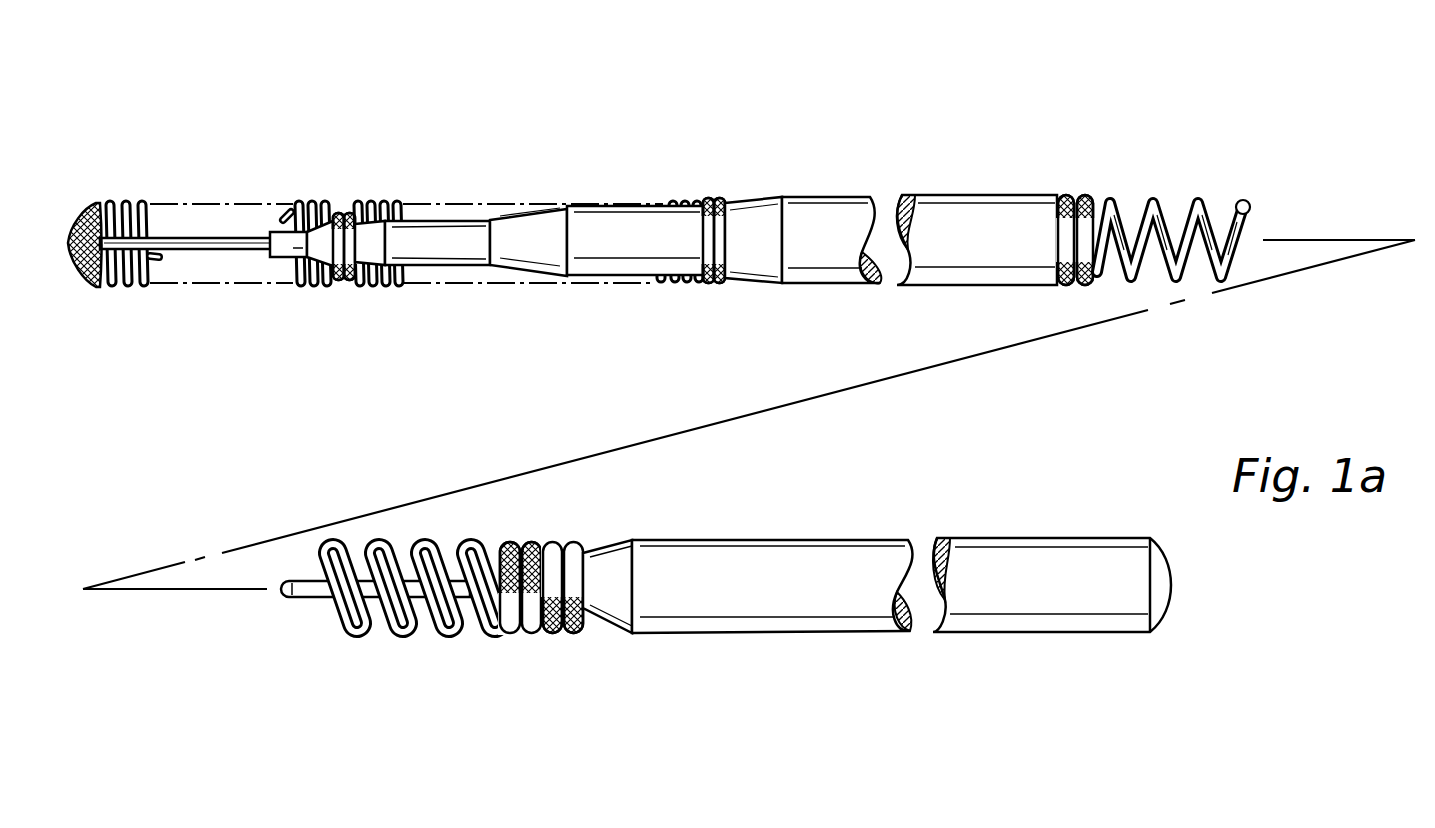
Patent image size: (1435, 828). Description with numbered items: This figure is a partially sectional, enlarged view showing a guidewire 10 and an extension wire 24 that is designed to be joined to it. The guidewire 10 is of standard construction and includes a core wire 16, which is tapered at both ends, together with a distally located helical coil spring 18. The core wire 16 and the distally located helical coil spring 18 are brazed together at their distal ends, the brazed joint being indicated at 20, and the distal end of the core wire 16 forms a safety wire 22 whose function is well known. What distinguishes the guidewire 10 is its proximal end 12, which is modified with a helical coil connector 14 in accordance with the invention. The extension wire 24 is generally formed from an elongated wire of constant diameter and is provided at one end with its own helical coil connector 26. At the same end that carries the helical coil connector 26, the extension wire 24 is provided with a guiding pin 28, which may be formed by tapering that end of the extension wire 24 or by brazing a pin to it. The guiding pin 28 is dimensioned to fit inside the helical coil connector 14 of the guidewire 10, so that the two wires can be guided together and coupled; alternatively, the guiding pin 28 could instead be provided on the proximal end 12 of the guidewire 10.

The guidewire 10 is at (774, 199).
The proximal end 12 is at (1056, 193).
The helical coil connector 14 is at (1217, 196).
The core wire 16 is at (993, 213).
The distally located helical coil spring 18 is at (376, 204).
The brazed joint 20 is at (84, 204).
The safety wire 22 is at (227, 231).
The extension wire 24 is at (840, 643).
The helical coil connector 26 is at (417, 622).
The guiding pin 28 is at (308, 600).